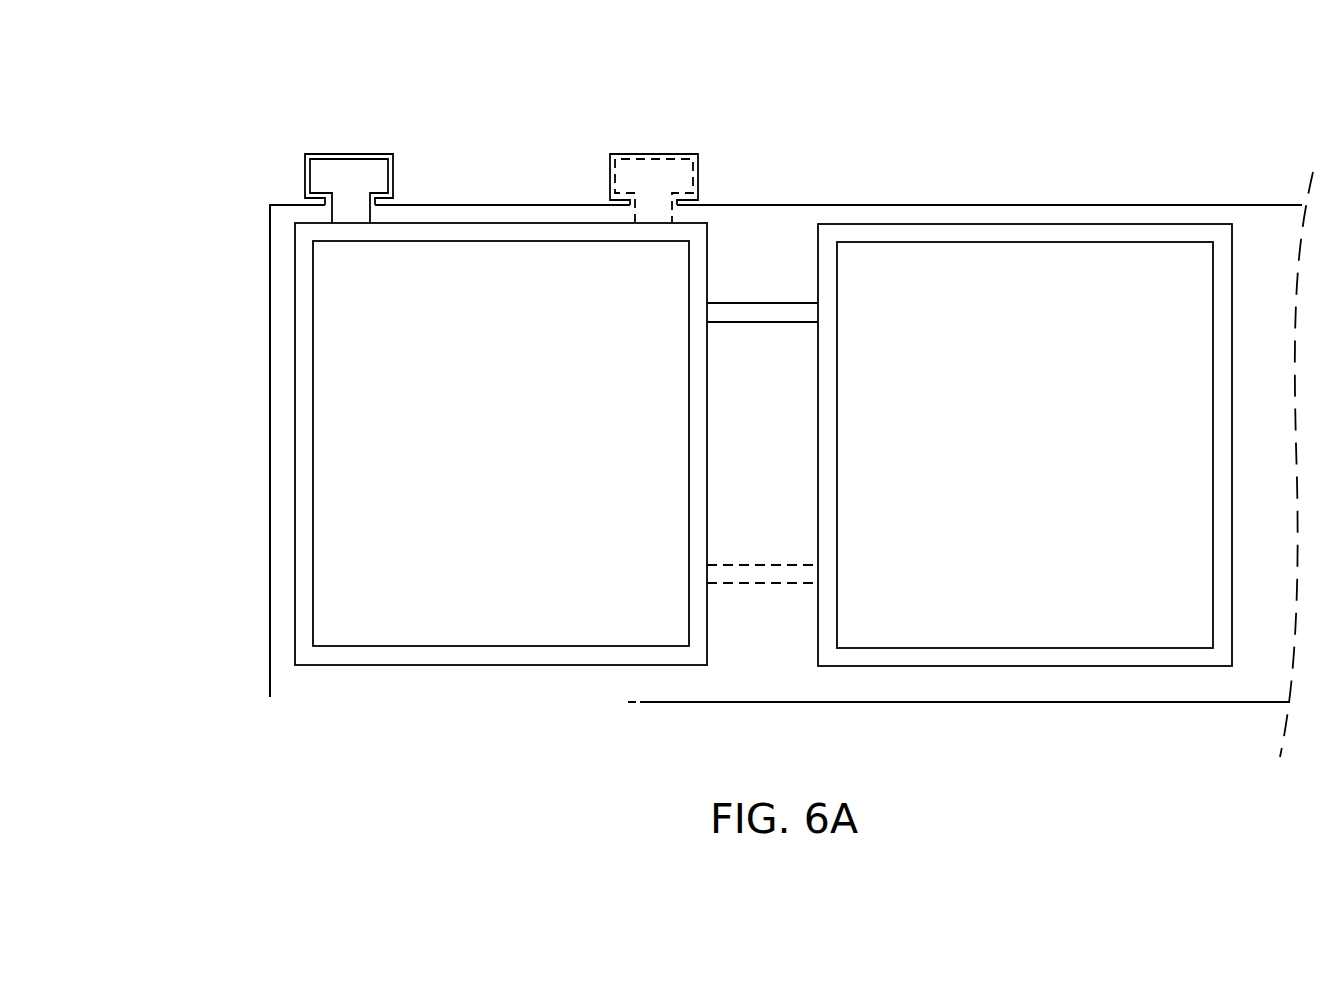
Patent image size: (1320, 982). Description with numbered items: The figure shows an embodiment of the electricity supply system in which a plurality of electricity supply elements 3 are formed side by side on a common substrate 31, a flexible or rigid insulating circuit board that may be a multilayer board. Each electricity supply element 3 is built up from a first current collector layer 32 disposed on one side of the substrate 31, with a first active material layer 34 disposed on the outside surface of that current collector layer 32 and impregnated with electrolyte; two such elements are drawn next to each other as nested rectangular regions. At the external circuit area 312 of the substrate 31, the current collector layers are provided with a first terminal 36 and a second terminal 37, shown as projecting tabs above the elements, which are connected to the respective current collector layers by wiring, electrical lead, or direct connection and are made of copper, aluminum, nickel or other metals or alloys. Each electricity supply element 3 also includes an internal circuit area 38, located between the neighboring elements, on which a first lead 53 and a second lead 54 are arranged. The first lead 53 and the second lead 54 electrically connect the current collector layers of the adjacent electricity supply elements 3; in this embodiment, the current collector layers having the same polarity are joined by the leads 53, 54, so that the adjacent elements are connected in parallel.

The electricity supply element 3 is at (227, 358).
The substrate 31 is at (277, 483).
The external circuit area 312 is at (275, 175).
The first current collector layer 32 is at (293, 612).
The first active material layer 34 is at (463, 628).
The first terminal 36 is at (345, 172).
The second terminal 37 is at (641, 166).
The internal circuit area 38 is at (733, 697).
The first lead 53 is at (787, 303).
The second lead 54 is at (765, 583).